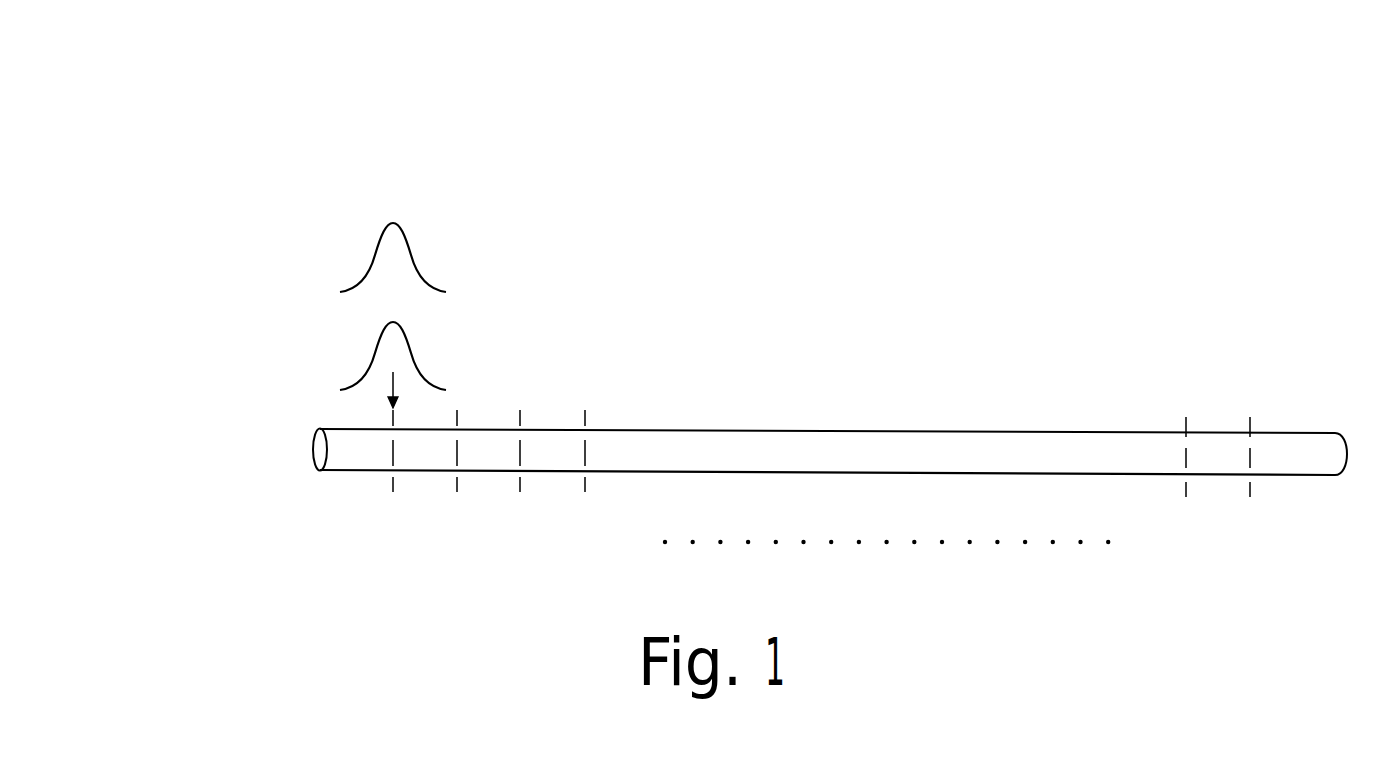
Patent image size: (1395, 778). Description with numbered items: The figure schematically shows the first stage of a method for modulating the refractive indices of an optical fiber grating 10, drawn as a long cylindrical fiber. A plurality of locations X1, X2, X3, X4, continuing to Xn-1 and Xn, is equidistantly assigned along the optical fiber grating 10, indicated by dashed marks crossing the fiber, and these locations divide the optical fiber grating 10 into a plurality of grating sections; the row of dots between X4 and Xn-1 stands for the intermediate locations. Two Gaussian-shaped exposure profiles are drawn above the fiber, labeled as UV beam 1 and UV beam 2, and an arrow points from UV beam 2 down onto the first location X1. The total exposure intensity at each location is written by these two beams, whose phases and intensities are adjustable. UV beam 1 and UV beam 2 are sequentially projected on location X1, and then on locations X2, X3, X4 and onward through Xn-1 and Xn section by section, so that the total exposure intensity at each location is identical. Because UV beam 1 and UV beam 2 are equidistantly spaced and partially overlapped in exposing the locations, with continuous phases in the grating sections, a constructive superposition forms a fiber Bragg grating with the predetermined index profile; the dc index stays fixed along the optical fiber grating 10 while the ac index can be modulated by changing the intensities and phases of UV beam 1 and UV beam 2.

The optical fiber grating 10 is at (1177, 215).
The UV beam 1 is at (258, 248).
The UV beam 2 is at (253, 364).
The location X1 is at (388, 482).
The location X2 is at (454, 482).
The location X3 is at (521, 482).
The location X4 is at (587, 482).
The location Xn-1 is at (1210, 528).
The location Xn is at (1265, 488).